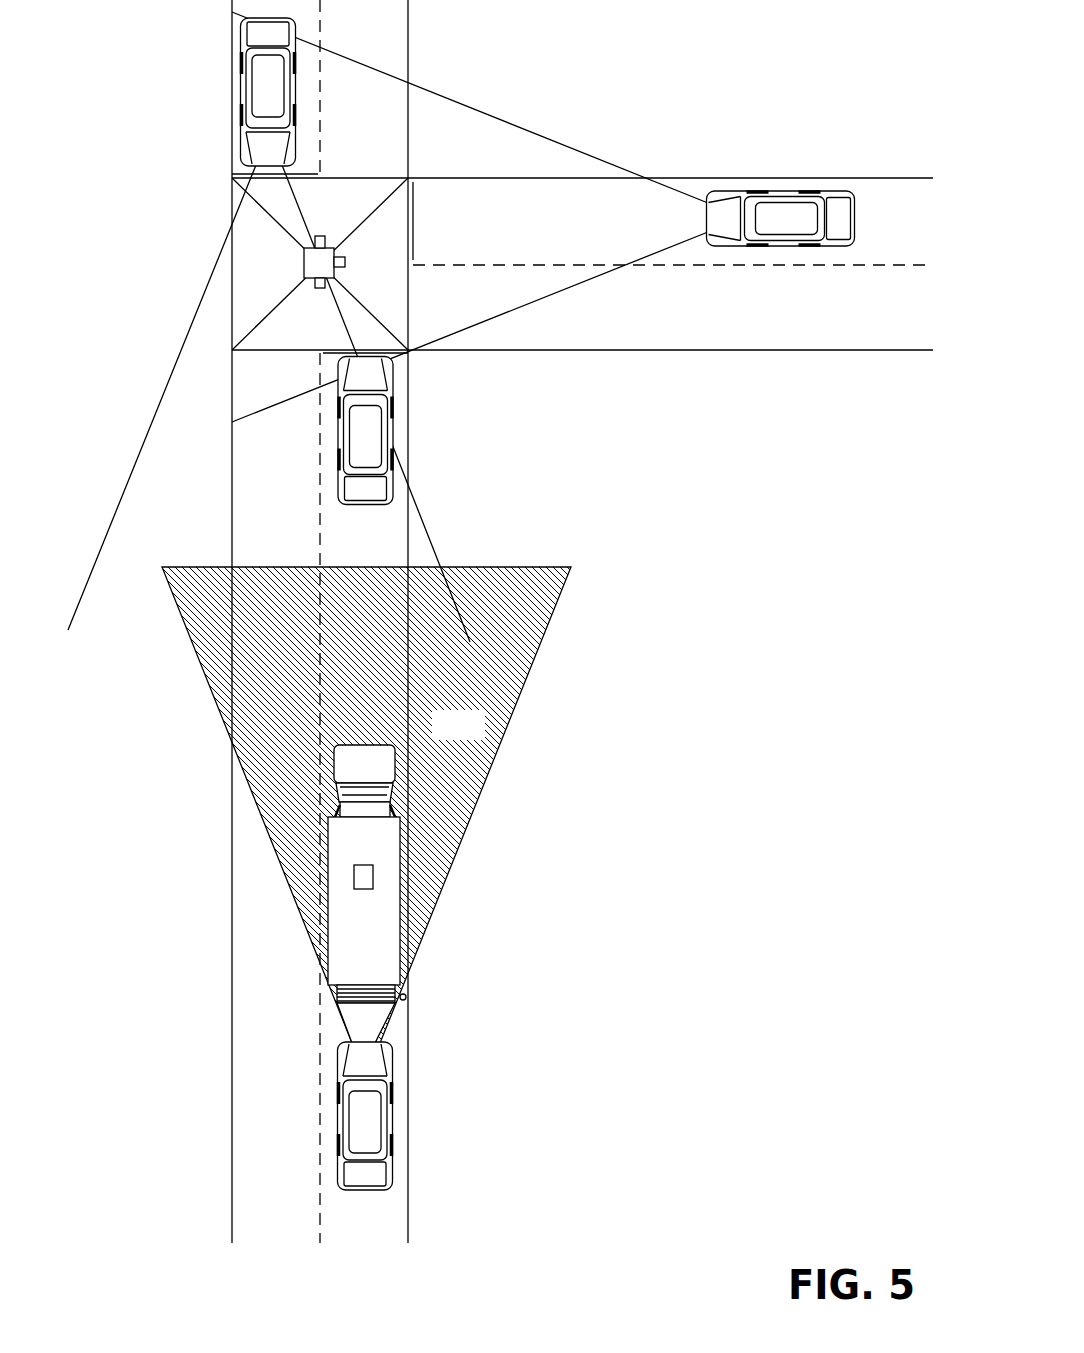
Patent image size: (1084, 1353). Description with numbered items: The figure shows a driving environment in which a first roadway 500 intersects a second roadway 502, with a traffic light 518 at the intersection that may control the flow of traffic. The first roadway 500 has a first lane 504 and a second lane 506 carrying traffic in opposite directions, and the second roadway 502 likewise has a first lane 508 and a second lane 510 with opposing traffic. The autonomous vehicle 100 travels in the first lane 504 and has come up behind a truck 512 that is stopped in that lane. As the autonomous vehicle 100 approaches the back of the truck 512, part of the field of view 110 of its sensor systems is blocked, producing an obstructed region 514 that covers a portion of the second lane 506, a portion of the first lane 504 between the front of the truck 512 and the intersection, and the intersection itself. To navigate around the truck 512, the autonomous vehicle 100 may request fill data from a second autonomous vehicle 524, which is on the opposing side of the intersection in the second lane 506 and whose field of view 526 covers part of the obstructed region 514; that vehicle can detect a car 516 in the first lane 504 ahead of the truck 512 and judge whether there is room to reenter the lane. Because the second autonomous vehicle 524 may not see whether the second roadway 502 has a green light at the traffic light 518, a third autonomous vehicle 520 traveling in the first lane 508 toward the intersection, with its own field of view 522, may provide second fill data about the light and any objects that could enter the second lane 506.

The autonomous vehicle 100 is at (403, 1105).
The field of view 110 is at (332, 1032).
The first roadway 500 is at (205, 946).
The second roadway 502 is at (700, 152).
The first lane 504 is at (380, 1234).
The second lane 506 is at (295, 1234).
The first lane 508 is at (918, 234).
The second lane 510 is at (918, 327).
The truck 512 is at (418, 940).
The obstructed region 514 is at (366, 822).
The car 516 is at (413, 434).
The traffic light 518 is at (290, 265).
The third autonomous vehicle 520 is at (794, 180).
The field of view 522 is at (566, 127).
The second autonomous vehicle 524 is at (232, 100).
The field of view 526 is at (182, 312).